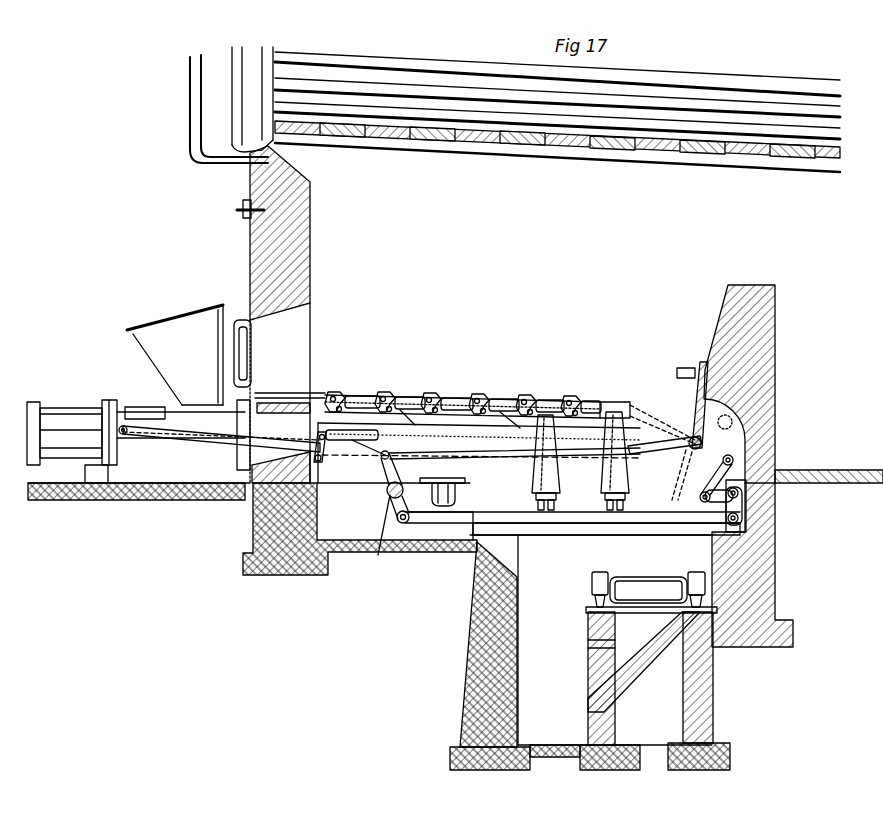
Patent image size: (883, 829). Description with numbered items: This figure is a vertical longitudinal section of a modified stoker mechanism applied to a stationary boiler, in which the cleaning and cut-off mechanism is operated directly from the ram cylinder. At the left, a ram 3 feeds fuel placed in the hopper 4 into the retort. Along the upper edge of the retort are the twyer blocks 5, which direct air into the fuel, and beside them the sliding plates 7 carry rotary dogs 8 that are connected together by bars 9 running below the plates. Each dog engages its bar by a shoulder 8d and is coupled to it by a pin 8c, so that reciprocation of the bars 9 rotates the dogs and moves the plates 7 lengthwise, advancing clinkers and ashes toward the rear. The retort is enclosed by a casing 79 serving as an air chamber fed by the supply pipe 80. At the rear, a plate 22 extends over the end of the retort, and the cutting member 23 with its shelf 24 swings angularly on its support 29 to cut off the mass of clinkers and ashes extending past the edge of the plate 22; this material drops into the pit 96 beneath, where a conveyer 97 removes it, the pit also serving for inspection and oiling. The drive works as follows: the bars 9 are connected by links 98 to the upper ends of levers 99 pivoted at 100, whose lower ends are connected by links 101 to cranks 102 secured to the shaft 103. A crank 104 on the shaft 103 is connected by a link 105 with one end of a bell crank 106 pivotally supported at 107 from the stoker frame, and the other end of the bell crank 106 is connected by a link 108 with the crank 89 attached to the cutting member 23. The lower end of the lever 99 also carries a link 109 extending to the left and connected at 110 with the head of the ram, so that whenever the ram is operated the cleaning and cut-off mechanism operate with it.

The ram 3 is at (65, 400).
The hopper 4 is at (175, 330).
The twyer blocks 5 is at (400, 392).
The sliding plates 7 is at (545, 393).
The rotary dogs 8 is at (482, 393).
The pin 8c is at (510, 420).
The shoulder 8d is at (416, 428).
The bars 9 is at (458, 415).
The plate 22 is at (614, 402).
The cutting member 23 is at (692, 366).
The shelf 24 is at (640, 448).
The support 29 is at (748, 430).
The casings 79 is at (580, 461).
The supply pipes 80 is at (457, 494).
The crank 89 is at (757, 448).
The pit 96 is at (590, 652).
The conveyer 97 is at (648, 589).
The links 98 is at (352, 440).
The levers 99 is at (318, 436).
The pivot 100 is at (340, 442).
The links 101 is at (382, 462).
The cranks 102 is at (405, 468).
The shaft 103 is at (372, 533).
The crank 104 is at (408, 518).
The link 105 is at (505, 522).
The bell crank 106 is at (745, 510).
The pivot 107 is at (750, 478).
The link 108 is at (750, 463).
The link 109 is at (212, 445).
The connection 110 is at (125, 435).